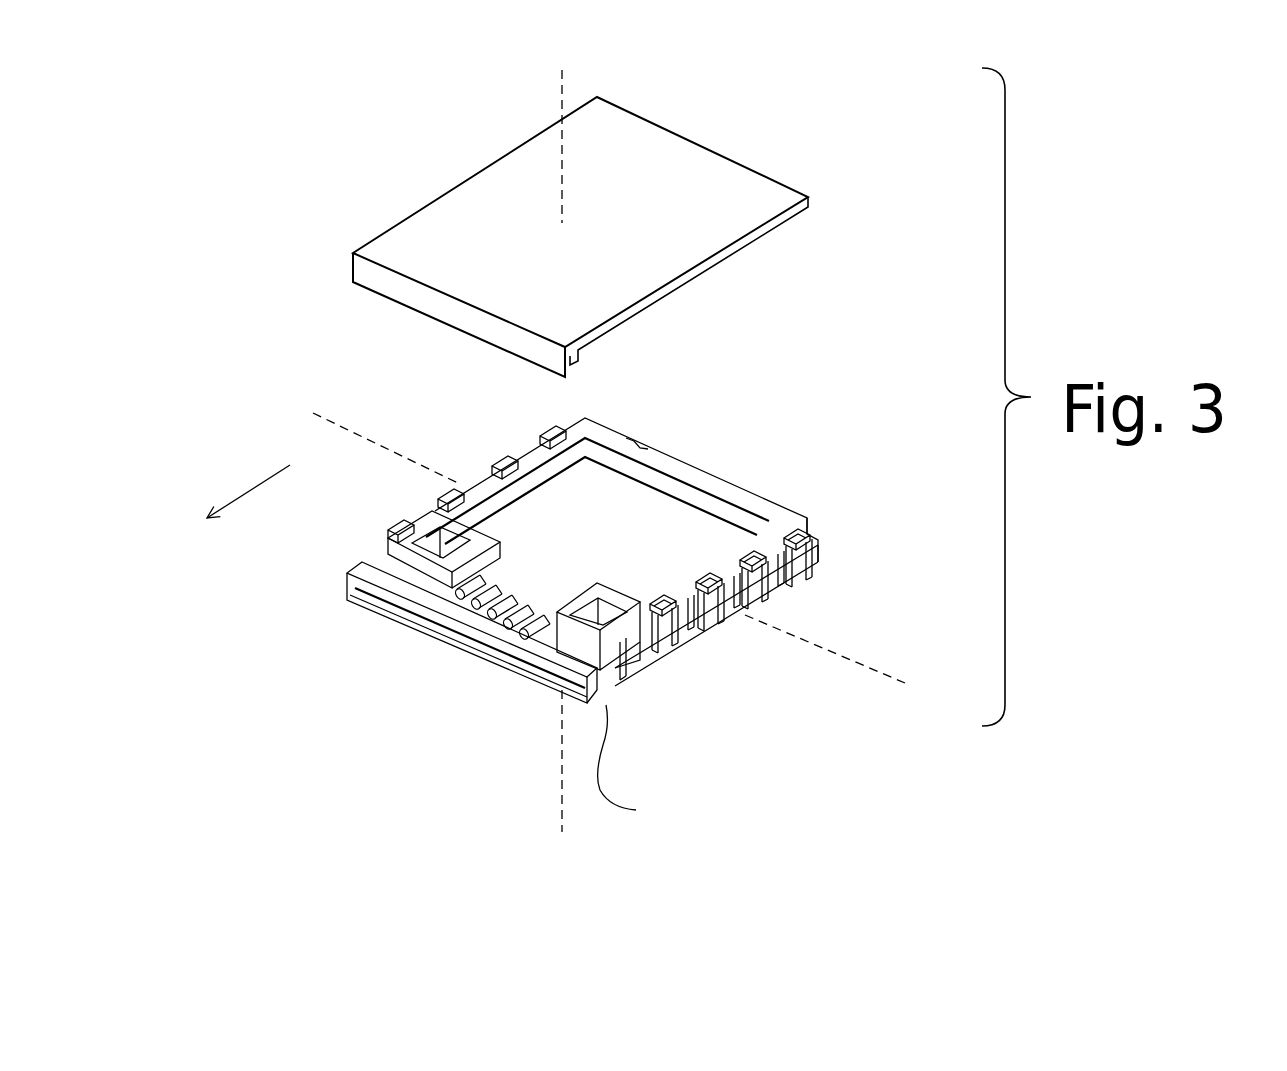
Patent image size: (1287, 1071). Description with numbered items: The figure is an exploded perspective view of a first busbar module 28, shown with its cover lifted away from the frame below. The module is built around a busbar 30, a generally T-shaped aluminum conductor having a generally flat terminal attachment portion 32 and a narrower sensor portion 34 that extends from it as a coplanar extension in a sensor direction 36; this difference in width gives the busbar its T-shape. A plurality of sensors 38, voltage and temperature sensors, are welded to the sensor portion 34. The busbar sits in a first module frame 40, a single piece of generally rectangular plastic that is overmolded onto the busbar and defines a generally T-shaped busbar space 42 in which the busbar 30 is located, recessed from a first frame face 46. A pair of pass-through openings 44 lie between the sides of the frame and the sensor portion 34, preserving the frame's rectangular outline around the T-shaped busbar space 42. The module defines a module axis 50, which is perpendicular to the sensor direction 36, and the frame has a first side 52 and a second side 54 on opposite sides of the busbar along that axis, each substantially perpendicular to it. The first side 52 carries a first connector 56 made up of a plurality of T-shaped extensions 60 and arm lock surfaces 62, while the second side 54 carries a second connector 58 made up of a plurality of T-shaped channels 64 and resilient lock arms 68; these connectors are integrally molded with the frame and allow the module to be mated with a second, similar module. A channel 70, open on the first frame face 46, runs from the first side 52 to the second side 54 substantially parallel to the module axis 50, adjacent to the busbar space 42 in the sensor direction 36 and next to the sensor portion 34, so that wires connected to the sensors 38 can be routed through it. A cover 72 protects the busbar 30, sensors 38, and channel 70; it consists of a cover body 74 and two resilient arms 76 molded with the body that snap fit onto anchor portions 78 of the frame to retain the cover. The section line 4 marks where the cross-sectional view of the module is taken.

The line 4- 4 is at (603, 120).
The first busbar module 28 is at (868, 158).
The busbar 30 is at (575, 539).
The terminal attachment portion 32 is at (647, 518).
The sensor portion 34 is at (500, 573).
The sensor direction 36 is at (262, 483).
The sensors 38 is at (522, 608).
The first module frame 40 is at (600, 415).
The busbar space 42 is at (700, 527).
The pass-through openings 44 is at (425, 547).
The first frame face 46 is at (795, 516).
The module axis 50 is at (356, 437).
The first side 52 is at (633, 437).
The second side 54 is at (687, 642).
The first connector 56 is at (393, 497).
The second connector 58 is at (825, 548).
The T-shaped extensions 60 is at (552, 432).
The arm lock surfaces 62 is at (532, 453).
The T-shaped channels 64 is at (800, 560).
The resilient lock arms 68 is at (773, 580).
The channel 70 is at (630, 762).
The cover 72 is at (710, 138).
The cover body 74 is at (617, 216).
The resilient arms 76 is at (353, 273).
The anchor portions 78 is at (350, 576).